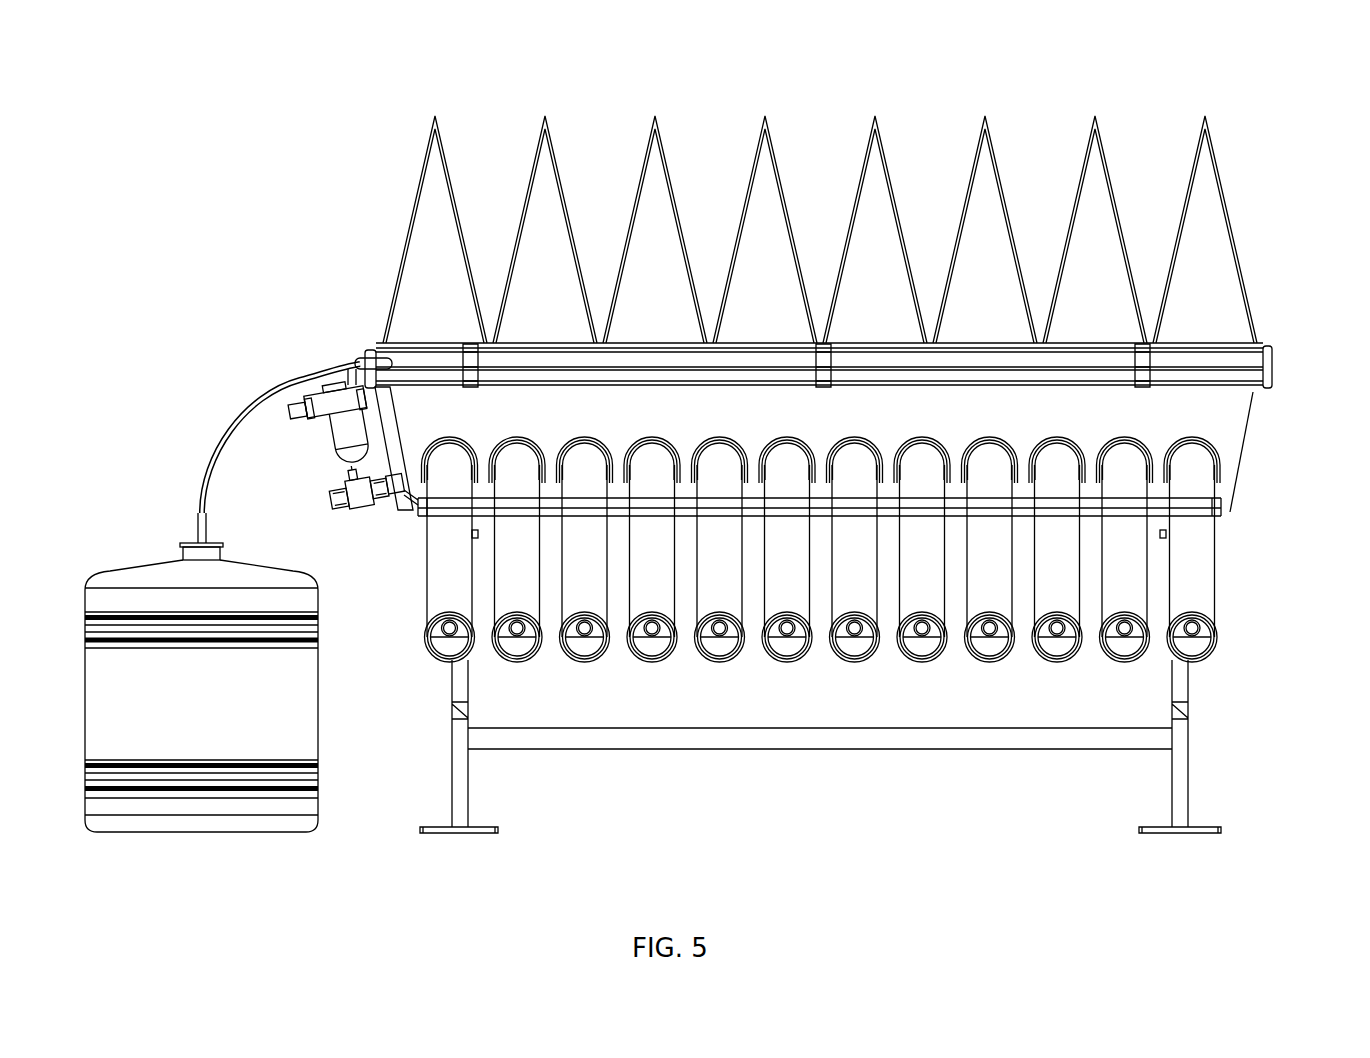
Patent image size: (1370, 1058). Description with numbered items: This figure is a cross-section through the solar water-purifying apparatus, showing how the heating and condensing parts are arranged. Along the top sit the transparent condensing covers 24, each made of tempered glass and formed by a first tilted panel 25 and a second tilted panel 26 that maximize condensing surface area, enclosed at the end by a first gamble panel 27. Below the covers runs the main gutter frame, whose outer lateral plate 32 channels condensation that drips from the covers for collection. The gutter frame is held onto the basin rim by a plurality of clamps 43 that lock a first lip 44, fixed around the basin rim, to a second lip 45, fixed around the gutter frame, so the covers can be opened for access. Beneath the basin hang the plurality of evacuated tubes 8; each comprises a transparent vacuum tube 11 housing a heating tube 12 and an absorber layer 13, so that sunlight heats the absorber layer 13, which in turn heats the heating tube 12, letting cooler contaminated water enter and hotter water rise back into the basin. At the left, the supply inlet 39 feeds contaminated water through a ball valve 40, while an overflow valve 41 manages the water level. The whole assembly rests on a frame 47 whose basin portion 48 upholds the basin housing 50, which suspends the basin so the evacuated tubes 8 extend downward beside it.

The evacuated tubes 8 is at (859, 583).
The transparent vacuum tube 11 is at (1211, 611).
The heating tube 12 is at (1195, 630).
The absorber layer 13 is at (1202, 651).
The transparent condensing covers 24 is at (690, 163).
The first tilted panel 25 is at (1218, 192).
The second tilted panel 26 is at (1228, 215).
The first gamble panel 27 is at (1228, 290).
The outer lateral plate 32 is at (372, 355).
The supply inlet 39 is at (397, 492).
The ball valve 40 is at (330, 503).
The overflow valve 41 is at (318, 455).
The clamps 43 is at (1272, 357).
The first lip 44 is at (363, 365).
The second lip 45 is at (373, 352).
The frame 47 is at (1242, 824).
The basin portion 48 is at (1179, 737).
The basin housing 50 is at (1230, 491).